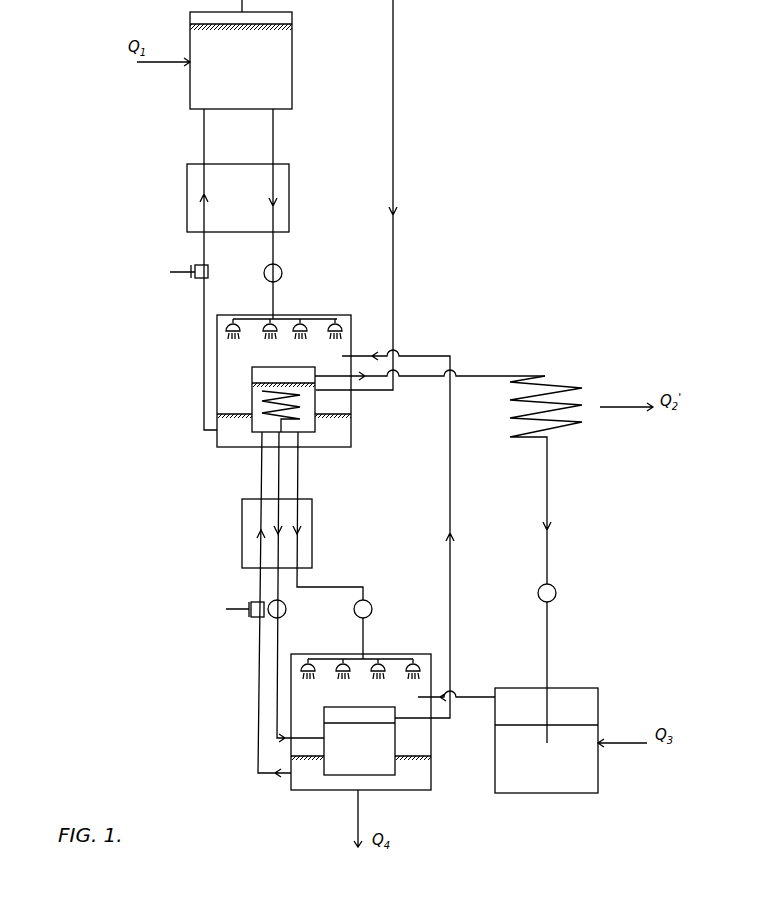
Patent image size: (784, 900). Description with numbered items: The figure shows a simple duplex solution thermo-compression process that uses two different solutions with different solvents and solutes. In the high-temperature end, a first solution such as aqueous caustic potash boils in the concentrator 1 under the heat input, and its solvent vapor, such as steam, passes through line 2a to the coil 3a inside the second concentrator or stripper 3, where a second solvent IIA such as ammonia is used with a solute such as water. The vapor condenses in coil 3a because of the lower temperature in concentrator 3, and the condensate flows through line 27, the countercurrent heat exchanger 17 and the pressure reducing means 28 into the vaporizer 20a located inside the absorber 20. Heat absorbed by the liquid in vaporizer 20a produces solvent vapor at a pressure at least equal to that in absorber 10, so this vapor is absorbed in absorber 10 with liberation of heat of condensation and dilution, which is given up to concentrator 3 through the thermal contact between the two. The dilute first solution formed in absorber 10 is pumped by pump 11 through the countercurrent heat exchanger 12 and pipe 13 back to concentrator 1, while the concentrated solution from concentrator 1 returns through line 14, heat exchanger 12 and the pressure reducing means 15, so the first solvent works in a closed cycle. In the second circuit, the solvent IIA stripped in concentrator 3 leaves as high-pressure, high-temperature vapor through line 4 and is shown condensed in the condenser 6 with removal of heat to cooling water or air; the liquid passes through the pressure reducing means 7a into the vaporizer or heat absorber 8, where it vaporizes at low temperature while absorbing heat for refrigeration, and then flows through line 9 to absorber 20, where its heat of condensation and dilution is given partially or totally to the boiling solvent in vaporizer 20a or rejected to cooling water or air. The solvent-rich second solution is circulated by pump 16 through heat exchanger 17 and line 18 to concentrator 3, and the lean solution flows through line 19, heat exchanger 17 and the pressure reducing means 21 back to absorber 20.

The concentrator 1 is at (292, 63).
The line 2a is at (393, 108).
The second concentrator or stripper 3 is at (283, 399).
The coil 3a is at (272, 416).
The line 4 is at (486, 379).
The condenser 6 is at (560, 386).
The pressure reducing means 7a is at (539, 589).
The vaporizer or heat absorber 8 is at (546, 740).
The line 9 is at (478, 696).
The absorber 10 is at (284, 381).
The pump 11 is at (194, 268).
The countercurrent heat exchanger 12 is at (238, 198).
The pipe 13 is at (204, 135).
The line 14 is at (273, 135).
The pressure reducing means 15 is at (266, 271).
The pump 16 is at (236, 604).
The countercurrent heat exchanger 17 is at (242, 520).
The line 18 is at (258, 679).
The line 19 is at (348, 585).
The absorber 20 is at (361, 722).
The vaporizer 20a is at (359, 741).
The pressure reducing means 21 is at (375, 600).
The line 27 is at (278, 650).
The pressure reducing means 28 is at (286, 609).
The solvent IIA is at (252, 385).